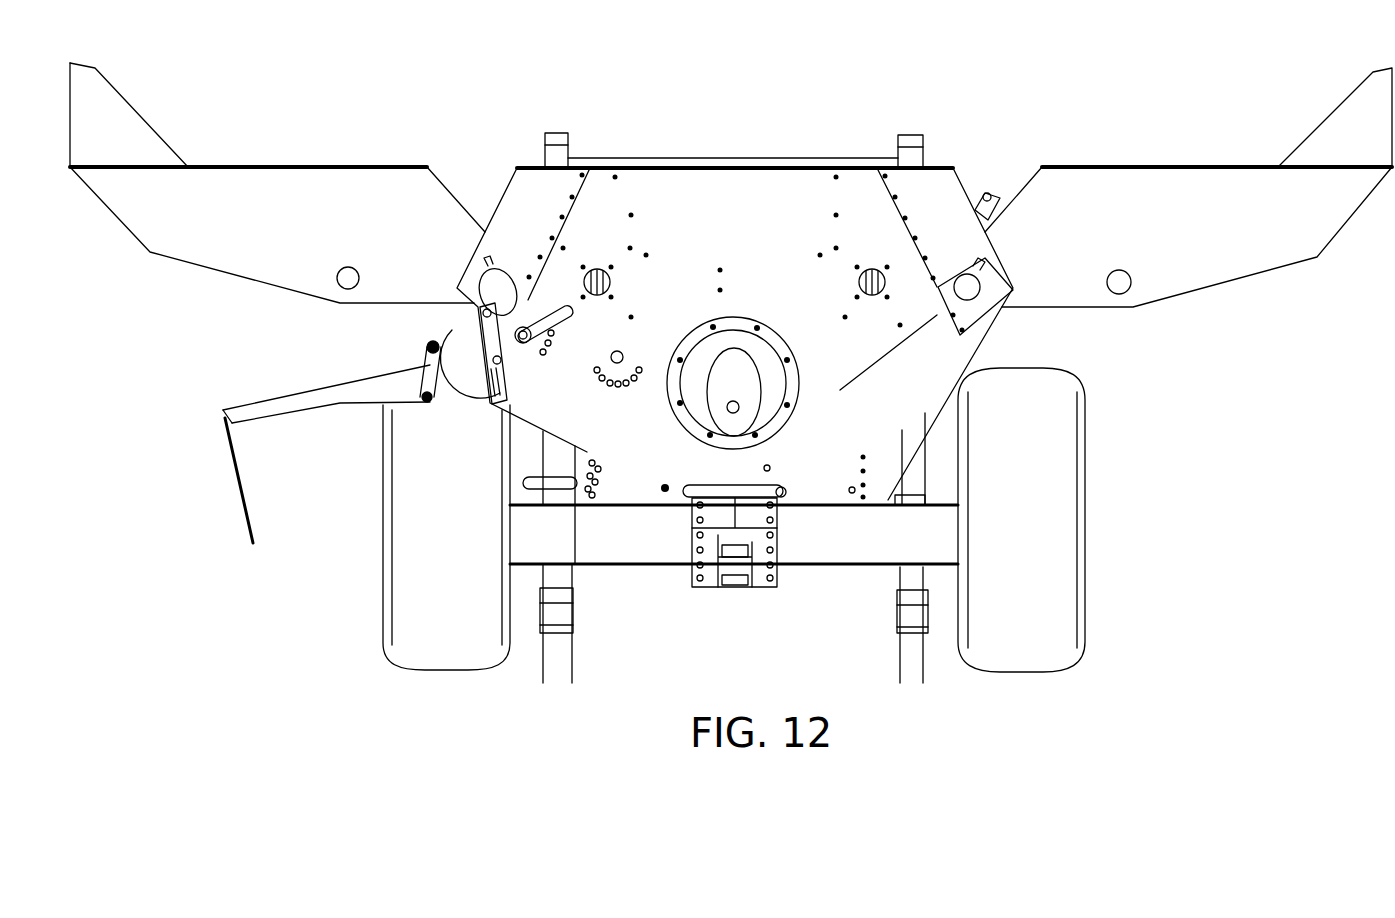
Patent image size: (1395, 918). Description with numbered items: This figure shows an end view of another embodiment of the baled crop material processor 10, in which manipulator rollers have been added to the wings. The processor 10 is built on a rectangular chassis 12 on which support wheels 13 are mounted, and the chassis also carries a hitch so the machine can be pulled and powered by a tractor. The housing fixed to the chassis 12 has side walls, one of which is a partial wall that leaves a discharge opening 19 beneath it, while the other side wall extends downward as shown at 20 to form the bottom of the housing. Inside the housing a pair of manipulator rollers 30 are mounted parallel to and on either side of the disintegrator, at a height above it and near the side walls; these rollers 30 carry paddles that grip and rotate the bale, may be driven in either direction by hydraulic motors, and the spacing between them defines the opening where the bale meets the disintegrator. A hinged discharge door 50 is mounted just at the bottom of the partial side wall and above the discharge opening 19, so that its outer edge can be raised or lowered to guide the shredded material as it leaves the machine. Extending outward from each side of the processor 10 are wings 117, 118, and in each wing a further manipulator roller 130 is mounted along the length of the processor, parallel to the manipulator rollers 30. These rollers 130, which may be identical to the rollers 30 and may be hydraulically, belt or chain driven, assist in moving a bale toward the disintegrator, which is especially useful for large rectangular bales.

The baled crop material processor 10 is at (835, 100).
The rectangular chassis 12 is at (835, 567).
The support wheels 13 is at (395, 603).
The discharge opening 19 is at (345, 514).
The bottom of the housing 20 is at (707, 343).
The manipulator rollers 30 is at (596, 269).
The discharge door 50 is at (290, 412).
The wing 117 is at (335, 172).
The wing 118 is at (1133, 175).
The further manipulator roller 130 is at (349, 267).